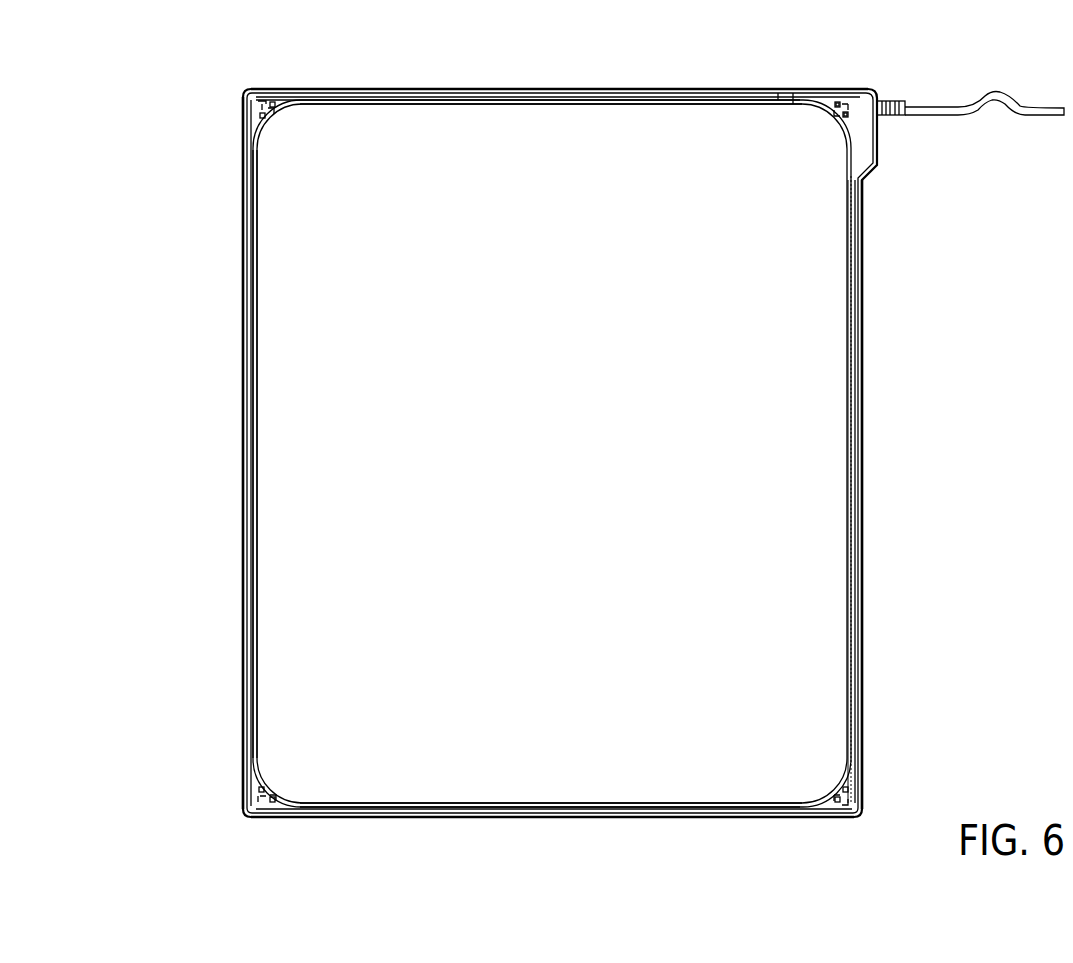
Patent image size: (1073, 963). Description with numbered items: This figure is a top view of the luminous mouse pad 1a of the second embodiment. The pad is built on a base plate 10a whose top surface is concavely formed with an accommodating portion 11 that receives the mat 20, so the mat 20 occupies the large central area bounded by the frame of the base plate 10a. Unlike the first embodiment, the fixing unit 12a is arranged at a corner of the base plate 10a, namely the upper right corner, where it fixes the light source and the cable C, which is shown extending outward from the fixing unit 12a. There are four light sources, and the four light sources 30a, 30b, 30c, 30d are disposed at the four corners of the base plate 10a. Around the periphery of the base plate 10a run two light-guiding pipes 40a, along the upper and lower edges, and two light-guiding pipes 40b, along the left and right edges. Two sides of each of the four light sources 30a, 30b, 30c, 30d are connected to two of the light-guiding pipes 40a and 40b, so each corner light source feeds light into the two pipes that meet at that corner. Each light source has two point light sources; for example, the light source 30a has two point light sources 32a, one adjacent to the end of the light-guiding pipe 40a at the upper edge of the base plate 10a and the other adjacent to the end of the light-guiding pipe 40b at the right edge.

The luminous mouse pad 1a is at (279, 49).
The base plate 10a is at (852, 464).
The accommodating portion 11 is at (850, 553).
The fixing unit 12a is at (870, 100).
The mat 20 is at (827, 355).
The light source 30a is at (846, 98).
The light source 30b is at (245, 97).
The light source 30c is at (247, 810).
The light source 30d is at (858, 813).
The point light source 32a is at (833, 100).
The light-guiding pipe 40a is at (553, 88).
The light-guiding pipe 40b is at (242, 382).
The cable C is at (1037, 108).